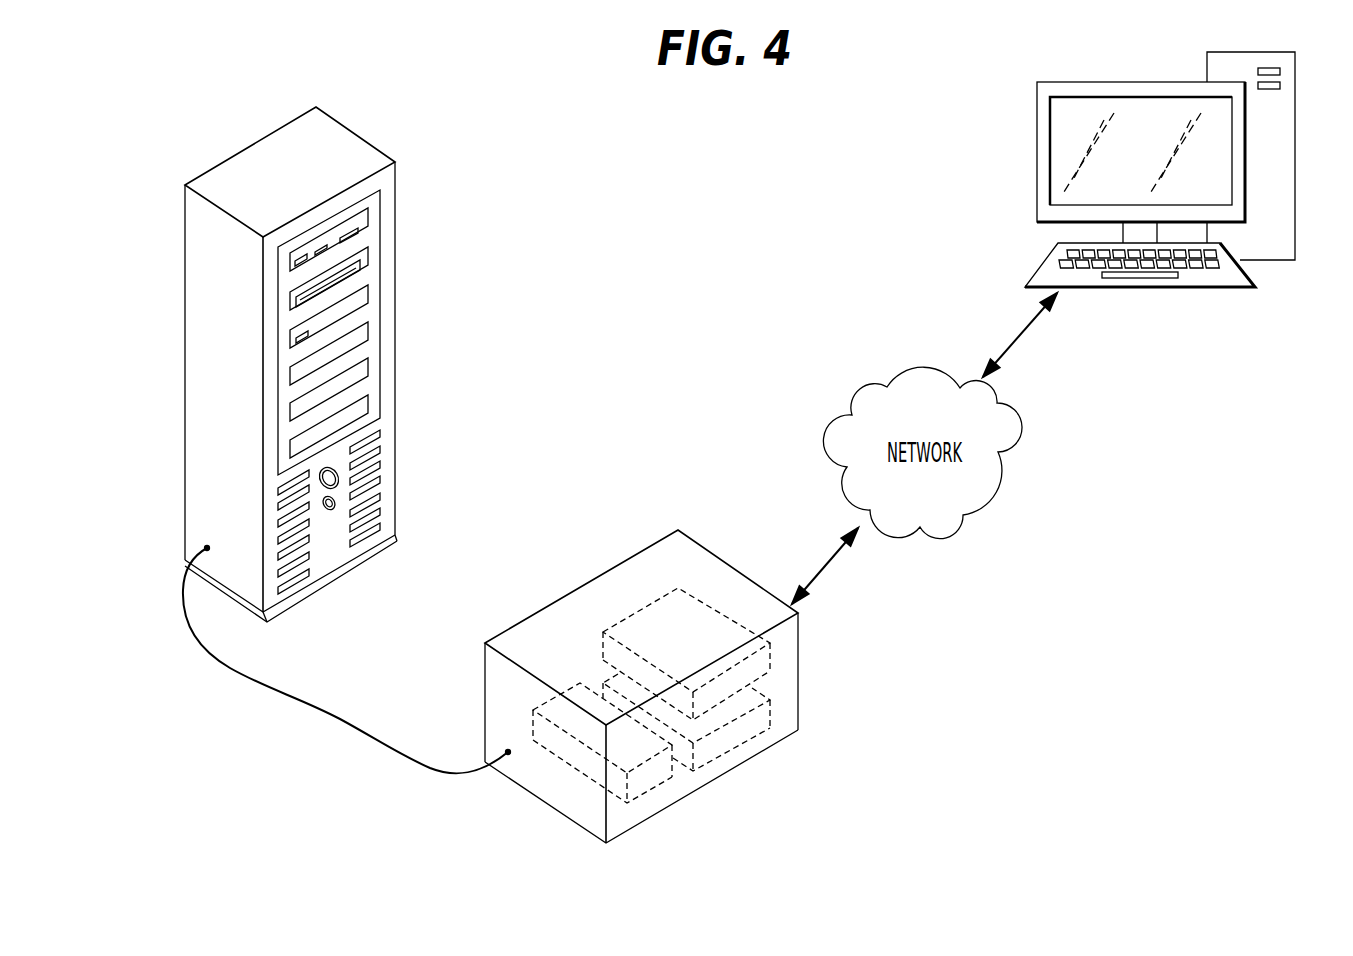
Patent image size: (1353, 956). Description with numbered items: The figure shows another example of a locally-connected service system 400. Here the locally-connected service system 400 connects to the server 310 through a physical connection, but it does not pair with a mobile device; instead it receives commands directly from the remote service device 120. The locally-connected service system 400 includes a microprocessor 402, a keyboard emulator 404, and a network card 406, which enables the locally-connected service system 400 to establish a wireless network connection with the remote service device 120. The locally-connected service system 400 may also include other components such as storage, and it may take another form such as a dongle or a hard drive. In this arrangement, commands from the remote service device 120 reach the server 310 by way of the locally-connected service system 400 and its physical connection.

The server 310 is at (228, 153).
The locally-connected service system 400 is at (633, 556).
The microprocessor 402 is at (770, 703).
The keyboard emulator 404 is at (673, 775).
The network card 406 is at (770, 657).
The remote service device 120 is at (1038, 103).